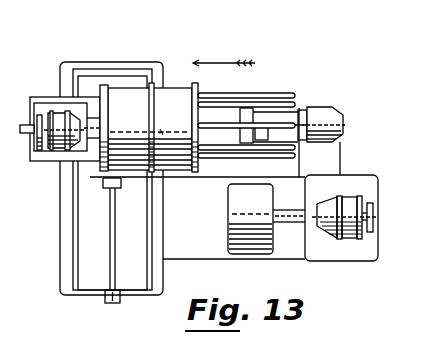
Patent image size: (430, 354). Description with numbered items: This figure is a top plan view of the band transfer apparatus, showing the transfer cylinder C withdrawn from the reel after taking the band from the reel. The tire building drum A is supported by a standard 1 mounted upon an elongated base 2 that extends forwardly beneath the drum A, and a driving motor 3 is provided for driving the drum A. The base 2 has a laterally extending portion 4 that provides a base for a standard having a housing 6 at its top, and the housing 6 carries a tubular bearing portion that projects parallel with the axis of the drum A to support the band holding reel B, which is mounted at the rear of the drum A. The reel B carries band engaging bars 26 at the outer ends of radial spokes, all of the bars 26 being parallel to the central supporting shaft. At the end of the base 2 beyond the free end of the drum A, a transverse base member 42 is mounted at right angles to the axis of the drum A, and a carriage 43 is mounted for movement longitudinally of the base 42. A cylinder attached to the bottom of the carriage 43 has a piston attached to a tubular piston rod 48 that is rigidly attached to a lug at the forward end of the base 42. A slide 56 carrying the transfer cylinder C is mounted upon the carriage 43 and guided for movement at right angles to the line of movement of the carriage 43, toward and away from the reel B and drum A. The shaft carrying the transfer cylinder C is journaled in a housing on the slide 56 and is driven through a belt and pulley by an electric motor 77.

The standard 1 is at (333, 252).
The elongated base 2 is at (202, 251).
The driving motor 3 is at (346, 196).
The laterally extending portion 4 is at (333, 151).
The housing 6 is at (320, 112).
The band engaging bars 26 is at (220, 96).
The transverse base member 42 is at (60, 244).
The carriage 43 is at (89, 77).
The tubular piston rod 48 is at (107, 258).
The slide 56 is at (62, 146).
The electric motor 77 is at (60, 120).
The tire building drum A is at (257, 255).
The band holding reel B is at (285, 90).
The transfer cylinder C is at (172, 93).